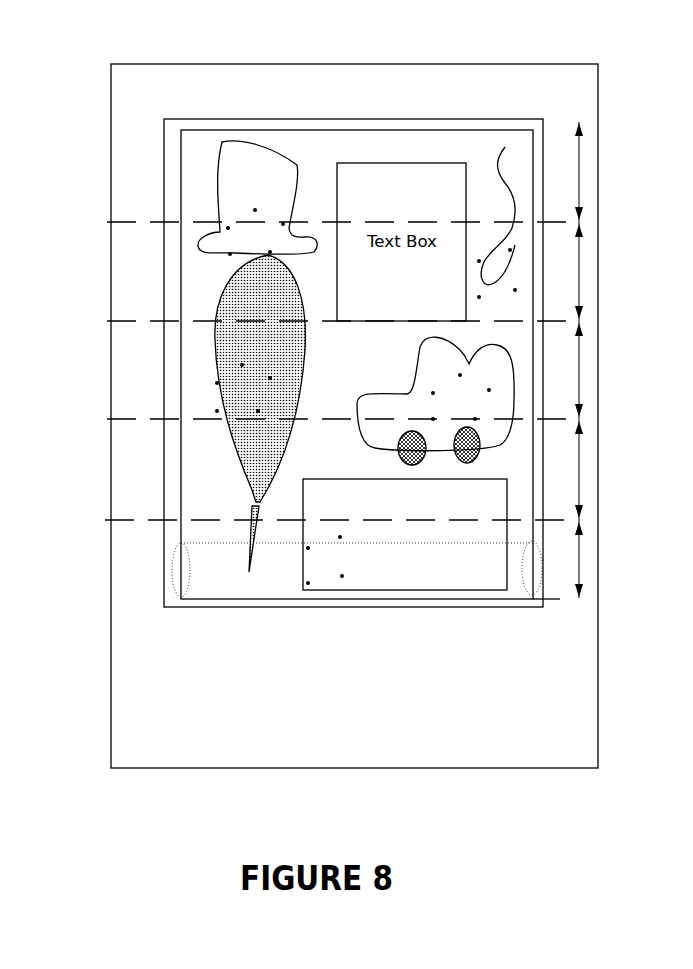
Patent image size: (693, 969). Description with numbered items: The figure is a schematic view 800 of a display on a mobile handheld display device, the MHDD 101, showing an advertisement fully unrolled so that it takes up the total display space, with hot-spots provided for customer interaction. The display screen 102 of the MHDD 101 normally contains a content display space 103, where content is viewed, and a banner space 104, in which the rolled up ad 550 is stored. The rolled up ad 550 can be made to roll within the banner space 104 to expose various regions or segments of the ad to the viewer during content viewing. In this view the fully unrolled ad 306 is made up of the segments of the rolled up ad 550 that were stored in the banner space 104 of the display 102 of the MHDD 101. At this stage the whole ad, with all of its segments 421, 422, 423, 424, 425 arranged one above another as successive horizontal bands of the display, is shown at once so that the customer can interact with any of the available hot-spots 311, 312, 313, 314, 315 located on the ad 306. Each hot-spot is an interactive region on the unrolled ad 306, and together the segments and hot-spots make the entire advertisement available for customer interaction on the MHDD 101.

The schematic view 800 is at (530, 38).
The MHDD 101 is at (598, 478).
The display screen 102 is at (543, 322).
The content display space 103 is at (533, 227).
The banner space 104 is at (545, 562).
The ad 306 is at (195, 494).
The hot-spot 311 is at (229, 400).
The hot-spot 312 is at (228, 230).
The hot-spot 313 is at (465, 402).
The hot-spot 314 is at (495, 268).
The hot-spot 315 is at (317, 557).
The segment 421 is at (576, 172).
The segment 422 is at (576, 271).
The segment 423 is at (576, 370).
The segment 424 is at (576, 469).
The segment 425 is at (576, 559).
The rolled up ad 550 is at (202, 600).